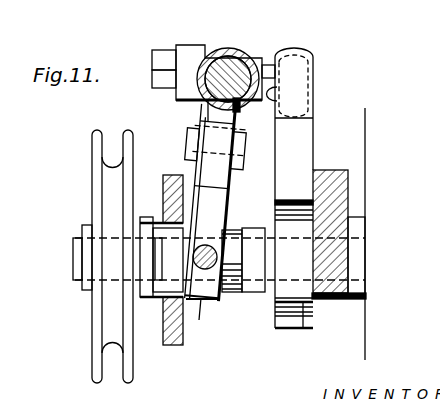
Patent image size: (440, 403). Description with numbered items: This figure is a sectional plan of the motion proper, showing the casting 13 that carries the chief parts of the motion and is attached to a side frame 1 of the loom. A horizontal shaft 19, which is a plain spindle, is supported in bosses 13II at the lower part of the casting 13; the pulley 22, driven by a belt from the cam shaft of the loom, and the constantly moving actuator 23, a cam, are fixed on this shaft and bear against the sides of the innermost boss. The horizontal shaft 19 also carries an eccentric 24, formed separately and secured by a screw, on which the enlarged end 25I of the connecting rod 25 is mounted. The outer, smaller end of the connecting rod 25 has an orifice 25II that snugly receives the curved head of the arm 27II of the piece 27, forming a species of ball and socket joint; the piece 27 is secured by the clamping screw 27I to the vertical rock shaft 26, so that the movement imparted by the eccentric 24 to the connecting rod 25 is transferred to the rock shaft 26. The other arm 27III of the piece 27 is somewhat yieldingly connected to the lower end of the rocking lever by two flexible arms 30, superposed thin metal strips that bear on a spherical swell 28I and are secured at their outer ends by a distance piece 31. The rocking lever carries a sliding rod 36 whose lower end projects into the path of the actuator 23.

The side frame 1 is at (366, 172).
The frame or casting 13 is at (326, 172).
The bosses 13II is at (150, 300).
The horizontal shaft 19 is at (73, 260).
The pulley 22 is at (92, 204).
The constantly moving actuator 23 is at (232, 293).
The eccentric 24 is at (296, 328).
The connecting rod 25 is at (294, 188).
The enlarged end 25I is at (291, 330).
The orifice 25II is at (314, 58).
The vertical rock shaft 26 is at (254, 56).
The piece 27 is at (219, 62).
The clamping screw 27I is at (162, 60).
The arm 27II is at (278, 96).
The arm or projection 27III is at (211, 119).
The spherical swell 28I is at (203, 293).
The flexible arms 30 is at (164, 203).
The distance piece 31 is at (199, 320).
The sliding rod 36 is at (208, 244).